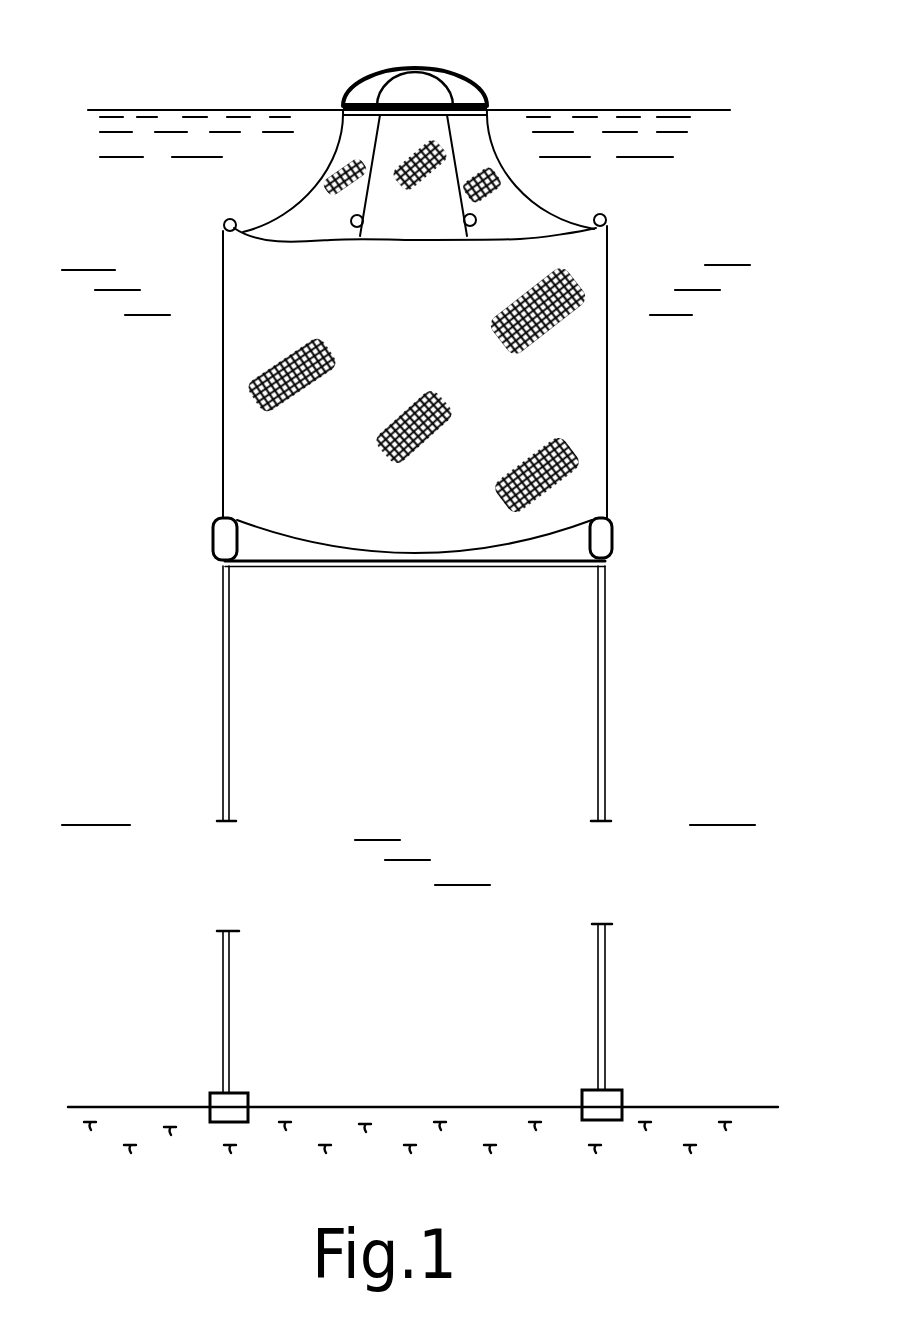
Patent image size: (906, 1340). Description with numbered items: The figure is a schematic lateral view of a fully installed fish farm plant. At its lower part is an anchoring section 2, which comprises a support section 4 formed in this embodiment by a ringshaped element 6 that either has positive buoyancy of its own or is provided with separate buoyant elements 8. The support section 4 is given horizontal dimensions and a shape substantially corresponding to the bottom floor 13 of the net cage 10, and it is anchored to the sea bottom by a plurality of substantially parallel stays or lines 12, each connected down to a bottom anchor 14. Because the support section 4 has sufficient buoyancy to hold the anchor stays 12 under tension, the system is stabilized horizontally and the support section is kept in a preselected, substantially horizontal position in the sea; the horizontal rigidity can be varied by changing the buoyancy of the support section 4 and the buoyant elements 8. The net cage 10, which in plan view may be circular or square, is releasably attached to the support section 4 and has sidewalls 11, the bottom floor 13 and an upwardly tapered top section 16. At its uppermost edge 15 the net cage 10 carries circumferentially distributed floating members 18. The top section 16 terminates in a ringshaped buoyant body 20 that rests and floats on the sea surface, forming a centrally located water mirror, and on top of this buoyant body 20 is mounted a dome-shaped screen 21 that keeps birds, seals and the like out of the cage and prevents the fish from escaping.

The anchoring section 2 is at (614, 724).
The support section 4 is at (614, 565).
The ringshaped element 6 is at (313, 566).
The buoyant elements 8 is at (613, 530).
The net cage 10 is at (413, 426).
The sidewalls 11 is at (222, 405).
The anchor stays 12 is at (606, 997).
The bottom floor 13 is at (287, 535).
The bottom anchors 14 is at (210, 1093).
The uppermost edge 15 is at (280, 240).
The top section 16 is at (510, 183).
The floating members 18 is at (606, 222).
The ringshaped buoyant body 20 is at (343, 108).
The dome-shaped screen 21 is at (433, 69).